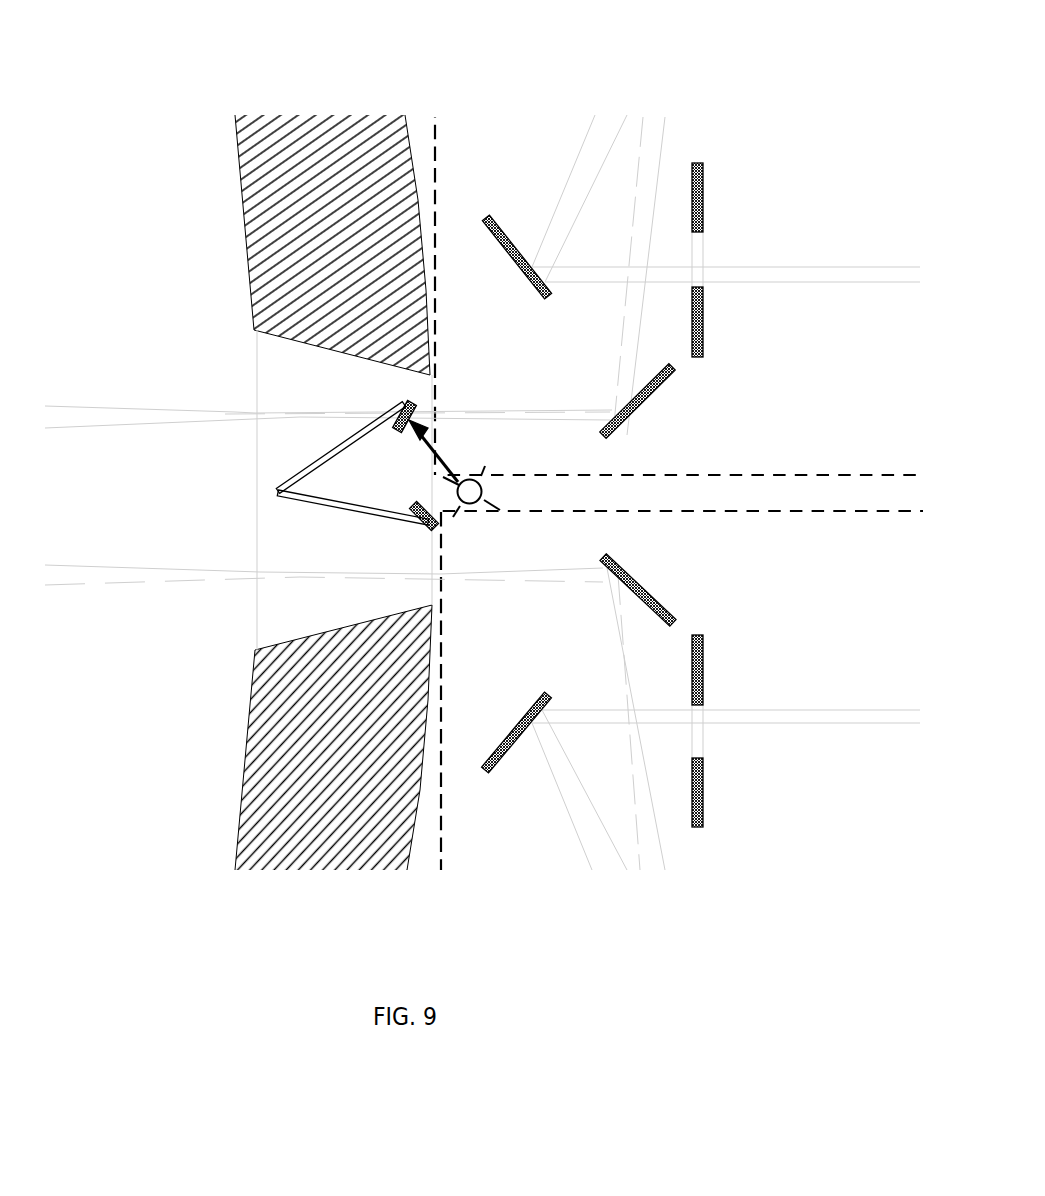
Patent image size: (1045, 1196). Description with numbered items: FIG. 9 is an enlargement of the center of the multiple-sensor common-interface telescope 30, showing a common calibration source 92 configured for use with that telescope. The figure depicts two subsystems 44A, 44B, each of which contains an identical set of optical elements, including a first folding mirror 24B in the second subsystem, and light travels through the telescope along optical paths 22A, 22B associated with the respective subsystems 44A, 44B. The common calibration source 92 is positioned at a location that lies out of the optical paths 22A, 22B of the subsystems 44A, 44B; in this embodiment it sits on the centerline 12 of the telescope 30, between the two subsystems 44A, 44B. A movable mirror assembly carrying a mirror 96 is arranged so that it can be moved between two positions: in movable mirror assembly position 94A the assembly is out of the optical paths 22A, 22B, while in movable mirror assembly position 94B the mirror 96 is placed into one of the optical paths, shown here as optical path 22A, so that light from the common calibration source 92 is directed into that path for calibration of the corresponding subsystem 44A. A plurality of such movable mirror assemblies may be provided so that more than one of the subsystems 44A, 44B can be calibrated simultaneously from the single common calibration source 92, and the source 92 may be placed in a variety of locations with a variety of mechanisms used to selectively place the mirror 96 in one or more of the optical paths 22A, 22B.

The multiple-sensor common-interface telescope 30 is at (348, 56).
The centerline 12 is at (353, 250).
The optical path 22A is at (156, 408).
The optical path 22B is at (156, 580).
The first folding mirror 24B is at (665, 377).
The subsystem 44A is at (798, 474).
The subsystem 44B is at (798, 512).
The common calibration source 92 is at (481, 483).
The movable mirror assembly position 94A is at (347, 508).
The movable mirror assembly position 94B is at (348, 445).
The mirror 96 is at (400, 405).